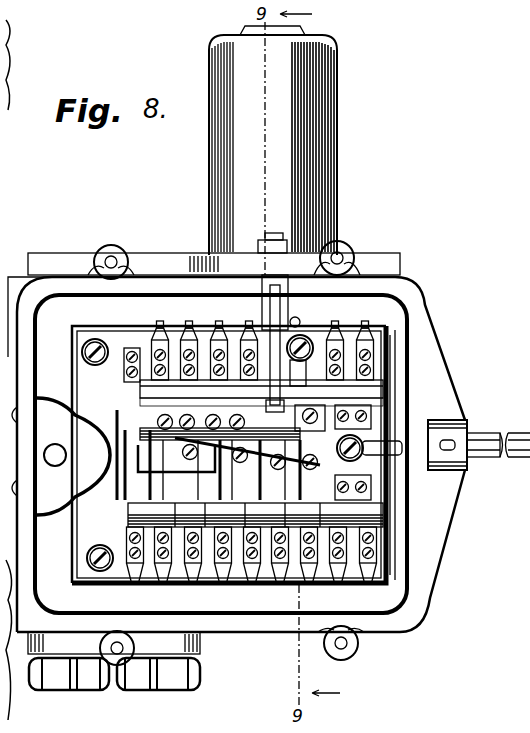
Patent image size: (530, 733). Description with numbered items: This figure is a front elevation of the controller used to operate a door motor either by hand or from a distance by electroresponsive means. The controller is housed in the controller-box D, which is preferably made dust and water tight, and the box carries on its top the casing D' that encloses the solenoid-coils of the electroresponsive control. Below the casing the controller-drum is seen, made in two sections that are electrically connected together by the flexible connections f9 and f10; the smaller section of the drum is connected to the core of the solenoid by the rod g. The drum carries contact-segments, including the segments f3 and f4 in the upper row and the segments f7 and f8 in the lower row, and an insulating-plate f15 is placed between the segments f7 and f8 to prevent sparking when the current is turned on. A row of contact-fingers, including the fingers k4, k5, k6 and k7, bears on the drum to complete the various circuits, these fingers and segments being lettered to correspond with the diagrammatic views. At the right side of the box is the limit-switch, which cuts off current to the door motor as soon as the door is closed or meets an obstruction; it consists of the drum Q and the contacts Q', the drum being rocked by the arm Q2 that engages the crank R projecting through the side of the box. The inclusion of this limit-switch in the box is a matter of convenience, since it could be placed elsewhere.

The casing D' is at (292, 140).
The controller-box D is at (236, 454).
The rod G is at (290, 322).
The rod g is at (300, 325).
The terminal f3 is at (132, 406).
The terminal f4 is at (218, 405).
The contact-segment f7 is at (240, 583).
The contact-segment f8 is at (356, 565).
The flexible connection f9 is at (122, 458).
The flexible connection f10 is at (333, 340).
The insulating-plate f15 is at (296, 560).
The contact-finger k4 is at (124, 380).
The contact-finger k5 is at (299, 373).
The contact-finger k6 is at (262, 583).
The contact-finger k7 is at (333, 583).
The drum Q is at (401, 430).
The contacts Q' is at (428, 449).
The arm Q2 is at (398, 442).
The crank R is at (447, 438).